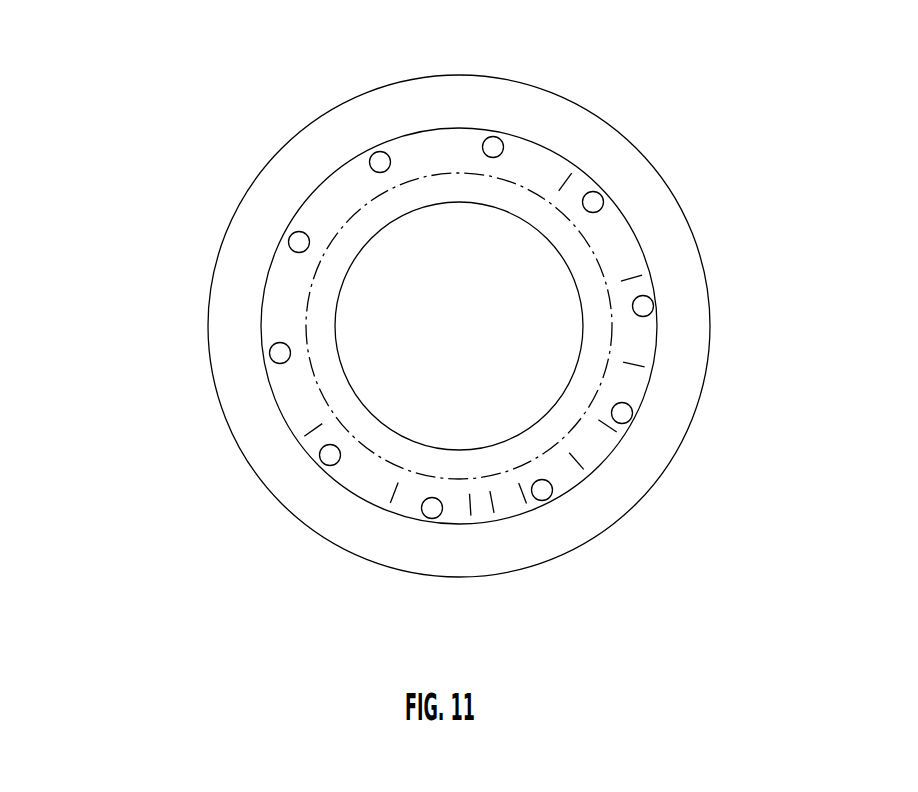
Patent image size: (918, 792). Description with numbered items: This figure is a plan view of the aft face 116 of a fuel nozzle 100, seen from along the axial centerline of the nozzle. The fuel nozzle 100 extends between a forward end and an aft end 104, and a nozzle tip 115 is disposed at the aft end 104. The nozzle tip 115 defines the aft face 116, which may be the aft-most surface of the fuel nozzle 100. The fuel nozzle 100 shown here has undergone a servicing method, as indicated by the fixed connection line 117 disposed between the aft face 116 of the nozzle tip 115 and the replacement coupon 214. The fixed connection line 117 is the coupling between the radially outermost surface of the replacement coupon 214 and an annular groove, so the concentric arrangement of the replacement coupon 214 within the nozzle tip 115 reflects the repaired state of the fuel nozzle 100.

The fuel nozzle 100 is at (106, 121).
The aft end 104 is at (681, 102).
The nozzle tip 115 is at (232, 219).
The aft face 116 is at (692, 305).
The fixed connection line 117 is at (613, 342).
The replacement coupon 214 is at (560, 425).